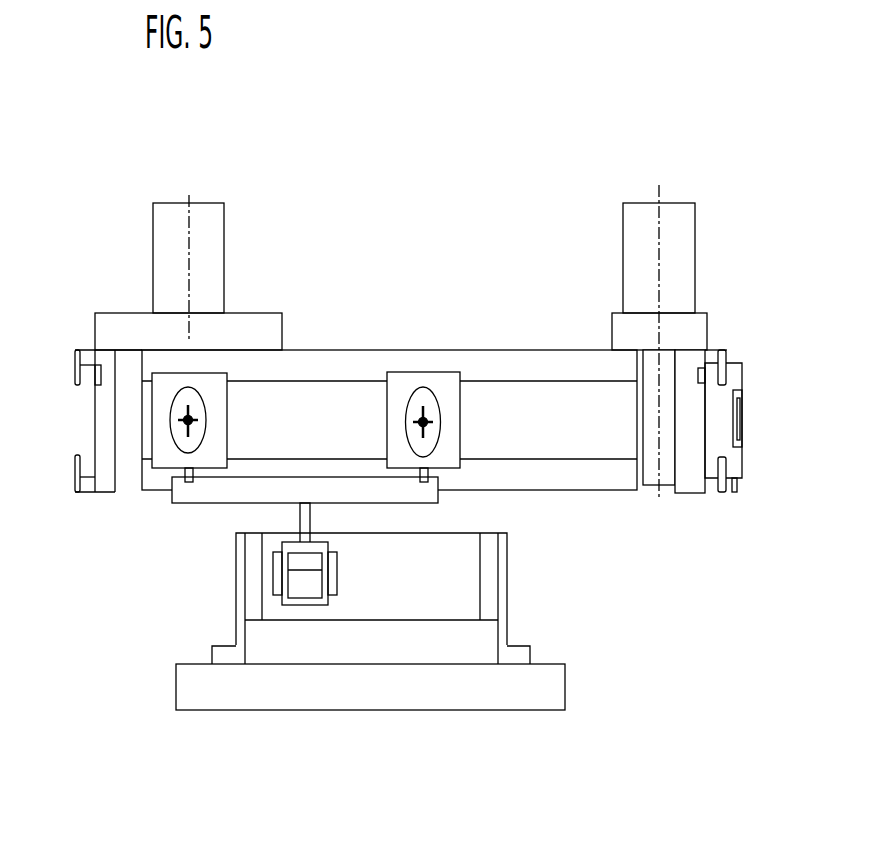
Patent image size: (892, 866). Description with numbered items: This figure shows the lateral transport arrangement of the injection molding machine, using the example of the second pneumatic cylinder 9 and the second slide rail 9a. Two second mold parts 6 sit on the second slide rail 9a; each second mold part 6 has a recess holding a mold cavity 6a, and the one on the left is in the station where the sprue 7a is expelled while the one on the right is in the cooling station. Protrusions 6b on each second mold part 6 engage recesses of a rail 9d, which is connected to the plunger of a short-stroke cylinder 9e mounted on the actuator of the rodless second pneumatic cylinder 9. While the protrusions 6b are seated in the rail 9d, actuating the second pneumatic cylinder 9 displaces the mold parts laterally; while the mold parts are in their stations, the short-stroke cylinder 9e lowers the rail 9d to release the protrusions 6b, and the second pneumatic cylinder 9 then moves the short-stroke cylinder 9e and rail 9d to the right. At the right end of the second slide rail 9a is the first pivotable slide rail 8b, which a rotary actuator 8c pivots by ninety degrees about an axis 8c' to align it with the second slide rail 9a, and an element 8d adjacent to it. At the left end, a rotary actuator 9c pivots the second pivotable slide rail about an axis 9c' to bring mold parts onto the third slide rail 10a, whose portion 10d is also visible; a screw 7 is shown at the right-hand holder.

The second mold part 6 is at (481, 341).
The mold cavity 6a is at (773, 397).
The protrusions 6b is at (320, 535).
The screw 7 is at (421, 488).
The sprue 7a is at (305, 421).
The first pivotable slide rail 8b is at (704, 465).
The rotary actuator 8c is at (692, 344).
The axis 8c' is at (629, 381).
The guide pin 8d is at (746, 528).
The second pneumatic cylinder 9 is at (393, 621).
The second slide rail 9a is at (389, 349).
The rotary actuator 9c is at (192, 276).
The axis 9c' is at (218, 226).
The rail 9d is at (207, 558).
The short-stroke cylinder 9e is at (256, 683).
The third slide rail 10a is at (85, 421).
The guide member lower portion 10d is at (62, 494).